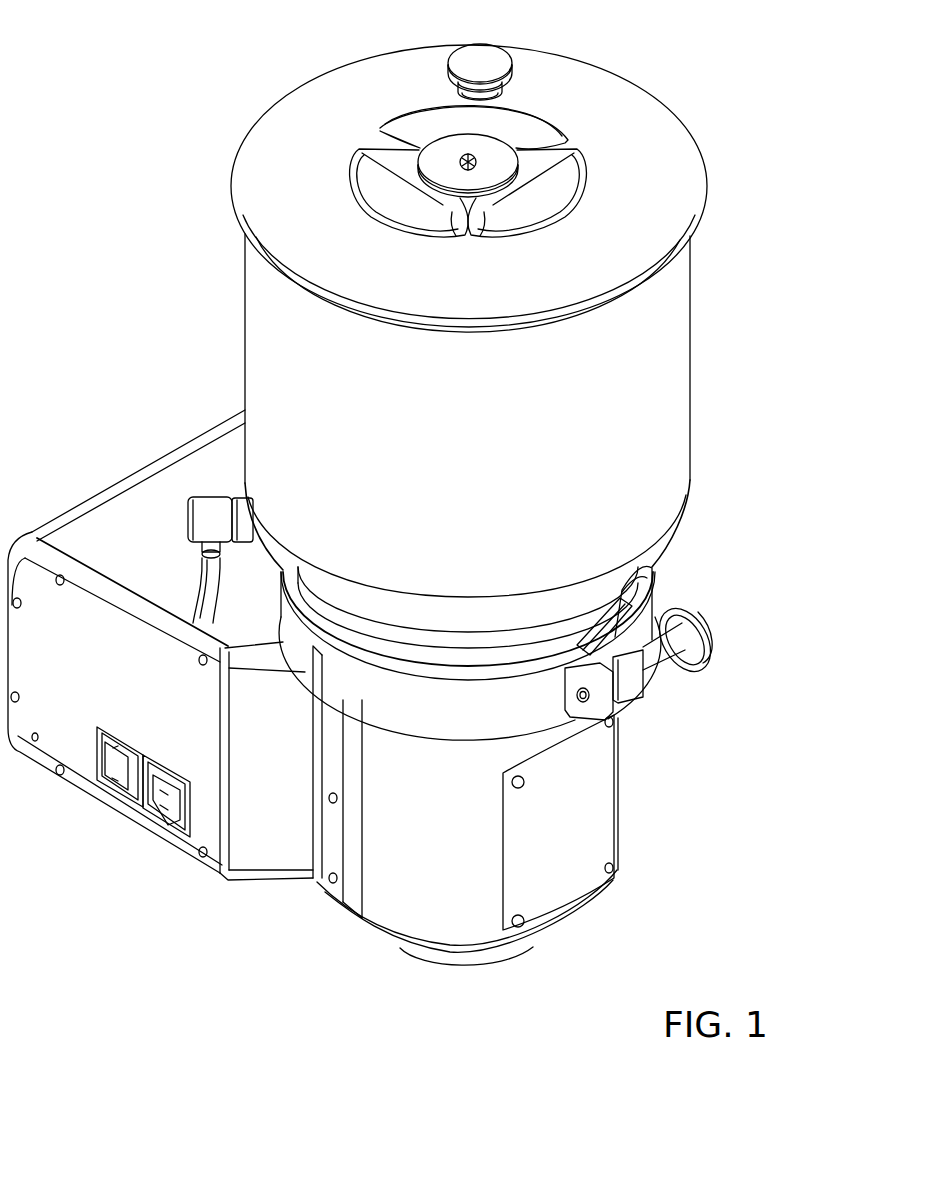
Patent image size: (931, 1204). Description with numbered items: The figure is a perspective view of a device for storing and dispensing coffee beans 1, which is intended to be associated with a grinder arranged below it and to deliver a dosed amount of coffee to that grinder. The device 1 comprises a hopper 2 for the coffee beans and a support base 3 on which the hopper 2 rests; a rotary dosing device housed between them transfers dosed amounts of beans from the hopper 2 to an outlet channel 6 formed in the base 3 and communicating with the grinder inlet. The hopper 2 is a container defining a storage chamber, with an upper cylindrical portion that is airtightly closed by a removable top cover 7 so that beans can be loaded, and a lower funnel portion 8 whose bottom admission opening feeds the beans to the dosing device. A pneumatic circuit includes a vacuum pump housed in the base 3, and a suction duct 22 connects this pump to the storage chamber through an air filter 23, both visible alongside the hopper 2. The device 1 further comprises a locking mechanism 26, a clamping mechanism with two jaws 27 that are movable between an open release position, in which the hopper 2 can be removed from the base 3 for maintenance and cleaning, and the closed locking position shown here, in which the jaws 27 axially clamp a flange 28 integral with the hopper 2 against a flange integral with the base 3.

The device for storing and dispensing coffee beans 1 is at (126, 143).
The hopper 2 is at (700, 320).
The support base 3 is at (283, 889).
The outlet channel 6 is at (467, 961).
The removable top cover 7 is at (637, 102).
The lower funnel portion 8 is at (673, 527).
The suction duct 22 is at (208, 590).
The air filter 23 is at (212, 500).
The locking mechanism 26 is at (645, 708).
The jaws 27 is at (640, 592).
The flange 28 is at (580, 636).